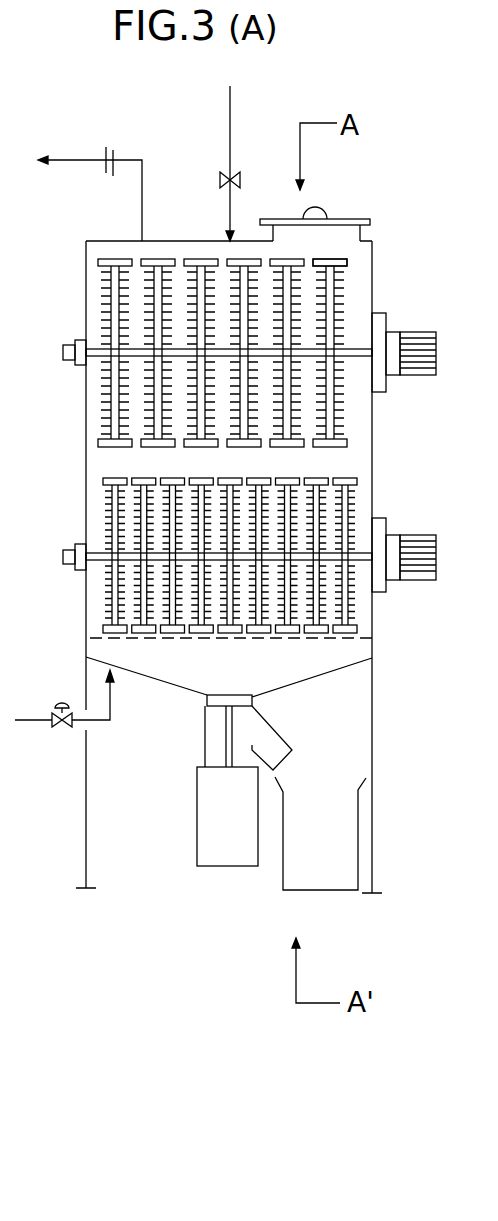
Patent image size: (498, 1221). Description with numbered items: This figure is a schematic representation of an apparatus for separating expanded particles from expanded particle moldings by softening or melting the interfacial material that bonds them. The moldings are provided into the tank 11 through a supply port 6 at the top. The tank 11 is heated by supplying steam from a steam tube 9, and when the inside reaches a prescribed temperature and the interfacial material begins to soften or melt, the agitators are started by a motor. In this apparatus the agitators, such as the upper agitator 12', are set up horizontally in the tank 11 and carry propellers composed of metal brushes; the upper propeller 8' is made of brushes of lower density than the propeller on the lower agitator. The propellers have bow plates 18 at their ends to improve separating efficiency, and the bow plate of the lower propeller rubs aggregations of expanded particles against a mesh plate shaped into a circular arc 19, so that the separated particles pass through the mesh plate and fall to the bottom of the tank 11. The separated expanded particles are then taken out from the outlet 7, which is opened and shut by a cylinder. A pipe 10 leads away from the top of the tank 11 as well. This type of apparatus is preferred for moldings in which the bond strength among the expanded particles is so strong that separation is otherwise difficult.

The supply port 6 is at (345, 219).
The outlet 7 is at (258, 723).
The propeller 8' is at (264, 353).
The steam tube 9 is at (32, 720).
The outlet pipe 10 is at (142, 160).
The tank 11 is at (374, 425).
The agitator 12' is at (203, 376).
The bow plate 18 is at (345, 265).
The mesh plate shaped into a circular arc 19 is at (330, 640).